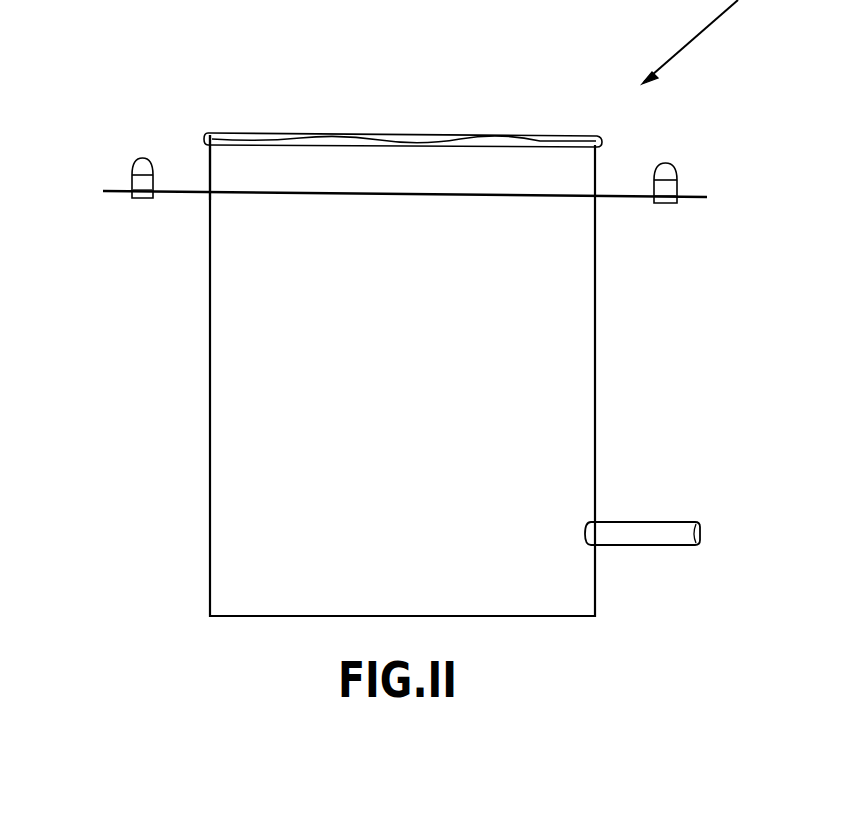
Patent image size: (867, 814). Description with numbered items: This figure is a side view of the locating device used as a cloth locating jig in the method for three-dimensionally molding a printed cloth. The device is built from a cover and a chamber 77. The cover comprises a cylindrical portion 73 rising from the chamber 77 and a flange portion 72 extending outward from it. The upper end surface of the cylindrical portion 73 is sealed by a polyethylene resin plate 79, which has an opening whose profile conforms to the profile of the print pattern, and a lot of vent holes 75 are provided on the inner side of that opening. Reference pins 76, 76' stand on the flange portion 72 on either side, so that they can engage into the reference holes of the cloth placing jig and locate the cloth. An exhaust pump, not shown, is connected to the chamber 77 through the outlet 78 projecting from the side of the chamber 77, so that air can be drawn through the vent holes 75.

The flange portion 72 is at (690, 196).
The cylindrical portion 73 is at (208, 170).
The vent holes 75 is at (405, 133).
The reference pin 76 is at (710, 134).
The reference pin 76' is at (96, 122).
The chamber 77 is at (594, 340).
The outlet 78 is at (638, 530).
The polyethylene resin plate 79 is at (535, 136).